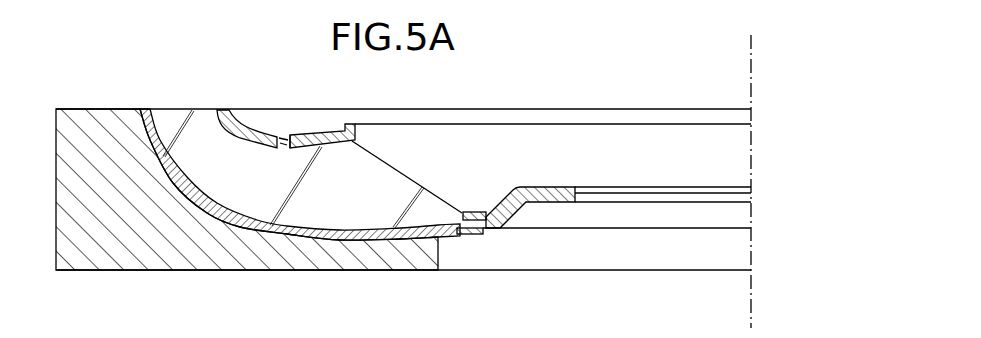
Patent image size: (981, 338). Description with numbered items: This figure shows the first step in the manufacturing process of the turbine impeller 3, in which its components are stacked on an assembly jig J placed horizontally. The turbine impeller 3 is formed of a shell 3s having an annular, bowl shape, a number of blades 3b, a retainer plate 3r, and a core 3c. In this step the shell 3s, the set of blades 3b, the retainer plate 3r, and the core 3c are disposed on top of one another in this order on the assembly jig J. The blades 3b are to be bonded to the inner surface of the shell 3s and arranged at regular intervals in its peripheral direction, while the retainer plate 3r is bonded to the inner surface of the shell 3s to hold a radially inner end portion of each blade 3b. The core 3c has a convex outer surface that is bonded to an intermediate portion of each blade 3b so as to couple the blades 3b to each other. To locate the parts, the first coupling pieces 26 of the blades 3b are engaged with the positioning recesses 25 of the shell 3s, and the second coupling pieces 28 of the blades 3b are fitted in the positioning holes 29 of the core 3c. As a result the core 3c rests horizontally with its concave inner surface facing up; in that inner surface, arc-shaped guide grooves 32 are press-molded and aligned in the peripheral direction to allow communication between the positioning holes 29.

The turbine impeller 3 is at (541, 101).
The blade 3b is at (390, 174).
The core 3c is at (328, 147).
The retainer plate 3r is at (537, 188).
The shell 3s is at (350, 236).
The positioning recess 25 is at (472, 235).
The first coupling piece 26 is at (470, 212).
The second coupling piece 28 is at (291, 139).
The positioning hole 29 is at (276, 145).
The guide groove 32 is at (285, 137).
The assembly jig J is at (130, 260).